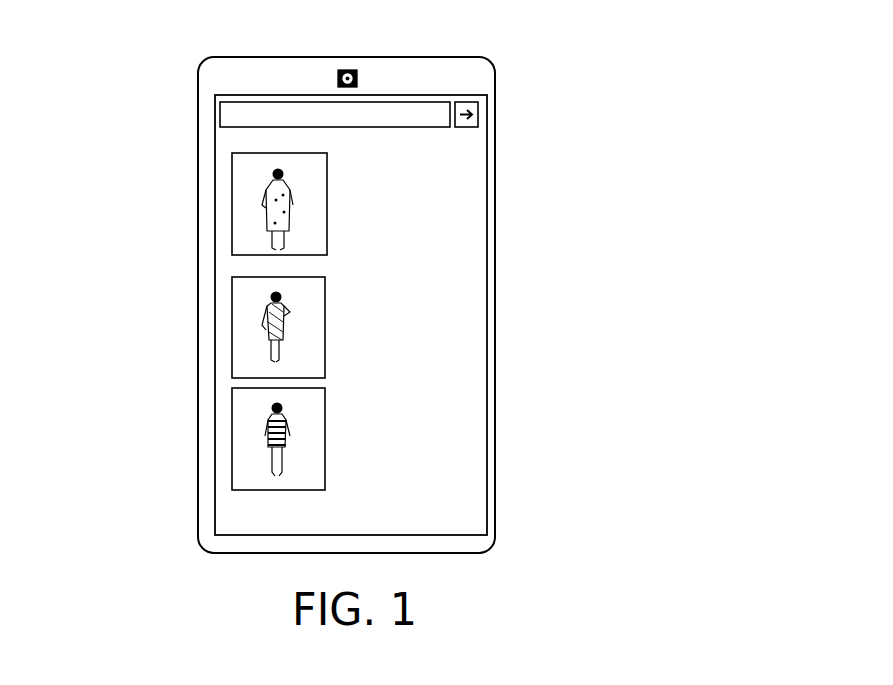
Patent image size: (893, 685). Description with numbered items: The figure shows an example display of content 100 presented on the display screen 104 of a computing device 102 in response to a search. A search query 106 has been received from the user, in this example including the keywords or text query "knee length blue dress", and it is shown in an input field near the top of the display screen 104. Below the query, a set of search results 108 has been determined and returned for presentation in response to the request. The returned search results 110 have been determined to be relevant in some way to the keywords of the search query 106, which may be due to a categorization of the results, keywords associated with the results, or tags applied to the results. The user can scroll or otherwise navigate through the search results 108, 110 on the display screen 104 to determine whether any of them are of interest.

The display of content 100 is at (740, 106).
The computing device 102 is at (190, 67).
The display screen 104 is at (212, 185).
The search query 106 is at (432, 109).
The set of search results 108 is at (461, 218).
The returned search results 110 is at (469, 438).